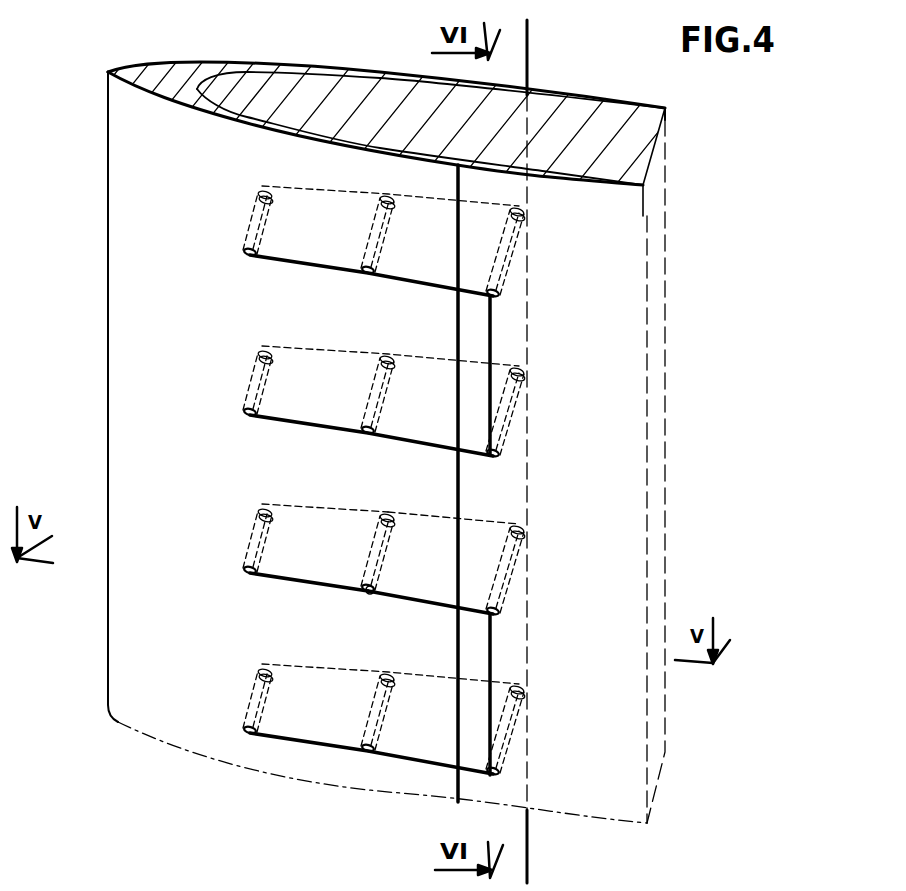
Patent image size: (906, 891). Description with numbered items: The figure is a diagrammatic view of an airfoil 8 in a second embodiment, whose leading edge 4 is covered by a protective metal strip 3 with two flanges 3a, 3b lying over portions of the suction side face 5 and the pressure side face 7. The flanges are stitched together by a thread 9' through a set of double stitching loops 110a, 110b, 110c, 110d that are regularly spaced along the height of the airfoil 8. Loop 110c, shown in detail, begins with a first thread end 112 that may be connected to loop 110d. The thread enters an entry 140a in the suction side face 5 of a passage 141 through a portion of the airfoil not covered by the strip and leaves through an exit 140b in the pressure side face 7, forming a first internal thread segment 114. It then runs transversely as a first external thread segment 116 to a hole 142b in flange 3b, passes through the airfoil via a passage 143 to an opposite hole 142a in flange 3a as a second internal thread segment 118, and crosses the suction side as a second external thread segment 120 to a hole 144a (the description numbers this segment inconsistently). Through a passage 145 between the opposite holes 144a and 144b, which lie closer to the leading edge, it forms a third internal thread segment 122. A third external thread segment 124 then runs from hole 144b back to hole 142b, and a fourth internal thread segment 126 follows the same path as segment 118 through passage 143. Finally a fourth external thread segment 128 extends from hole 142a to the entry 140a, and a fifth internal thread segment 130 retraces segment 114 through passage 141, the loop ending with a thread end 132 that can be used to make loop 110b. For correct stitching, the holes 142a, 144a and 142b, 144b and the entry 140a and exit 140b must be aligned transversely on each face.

The metal strip 3 is at (108, 72).
The flange 3a is at (280, 133).
The flange 3b is at (367, 72).
The leading edge 4 is at (193, 76).
The suction side face 5 is at (610, 200).
The pressure side face 7 is at (602, 100).
The airfoil 8 is at (612, 134).
The thread 9' is at (547, 451).
The double stitching loop 110a is at (203, 217).
The double stitching loop 110b is at (235, 383).
The double stitching loop 110c is at (377, 614).
The double stitching loop 110d is at (232, 713).
The first thread end 112 is at (493, 668).
The first internal thread segment 114 is at (507, 593).
The first external thread segment 116 is at (433, 515).
The second internal thread segment 118 is at (388, 537).
The lower manifold conduit 120 is at (297, 590).
The third internal thread segment 122 is at (257, 533).
The third external thread segment 124 is at (323, 507).
The fourth internal thread segment 126 is at (383, 584).
The fourth external thread segment 128 is at (444, 614).
The fifth internal thread segment 130 is at (522, 548).
The thread end 132 is at (530, 437).
The entry 140a is at (495, 620).
The exit 140b is at (527, 530).
The passage 141 is at (518, 568).
The hole 142a is at (367, 596).
The hole 142b is at (395, 513).
The passage 143 is at (388, 557).
The hole 144a is at (250, 574).
The hole 144b is at (268, 505).
The passage 145 is at (245, 552).